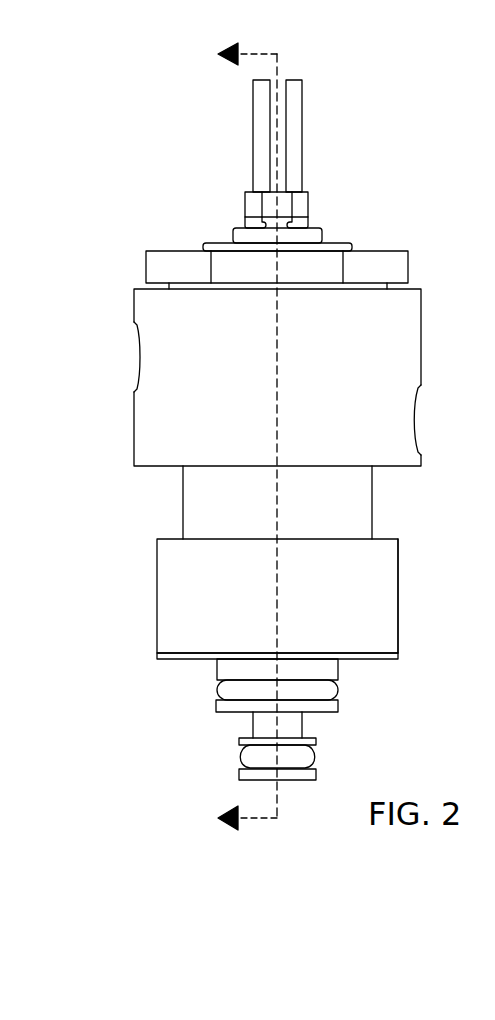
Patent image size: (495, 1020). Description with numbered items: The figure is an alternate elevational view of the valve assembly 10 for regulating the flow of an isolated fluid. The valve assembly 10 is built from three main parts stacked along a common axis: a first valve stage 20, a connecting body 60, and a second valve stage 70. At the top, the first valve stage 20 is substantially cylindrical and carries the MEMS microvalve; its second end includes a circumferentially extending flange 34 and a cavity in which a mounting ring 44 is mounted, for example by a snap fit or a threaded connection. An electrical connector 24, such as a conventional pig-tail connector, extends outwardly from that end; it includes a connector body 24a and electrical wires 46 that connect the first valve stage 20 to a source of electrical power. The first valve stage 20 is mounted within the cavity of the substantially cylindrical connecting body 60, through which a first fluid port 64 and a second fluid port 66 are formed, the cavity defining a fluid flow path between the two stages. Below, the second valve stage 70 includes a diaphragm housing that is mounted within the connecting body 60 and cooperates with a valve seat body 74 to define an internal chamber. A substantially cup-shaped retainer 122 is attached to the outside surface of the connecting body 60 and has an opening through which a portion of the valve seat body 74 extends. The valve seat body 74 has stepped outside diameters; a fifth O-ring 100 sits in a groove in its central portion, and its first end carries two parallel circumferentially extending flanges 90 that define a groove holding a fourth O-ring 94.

The valve assembly 10 is at (118, 104).
The electrical connector 24 is at (219, 147).
The electrical wires 46 is at (260, 122).
The connector body 24a is at (308, 205).
The first valve stage 20 is at (142, 245).
The mounting ring 44 is at (218, 243).
The flange 34 is at (408, 266).
The connecting body 60 is at (128, 304).
The second fluid port 66 is at (140, 360).
The first fluid port 64 is at (415, 420).
The second valve stage 70 is at (150, 600).
The retainer 122 is at (398, 562).
The valve seat body 74 is at (217, 670).
The fifth O-ring 100 is at (338, 690).
The flanges 90 is at (239, 740).
The fourth O-ring 94 is at (316, 755).